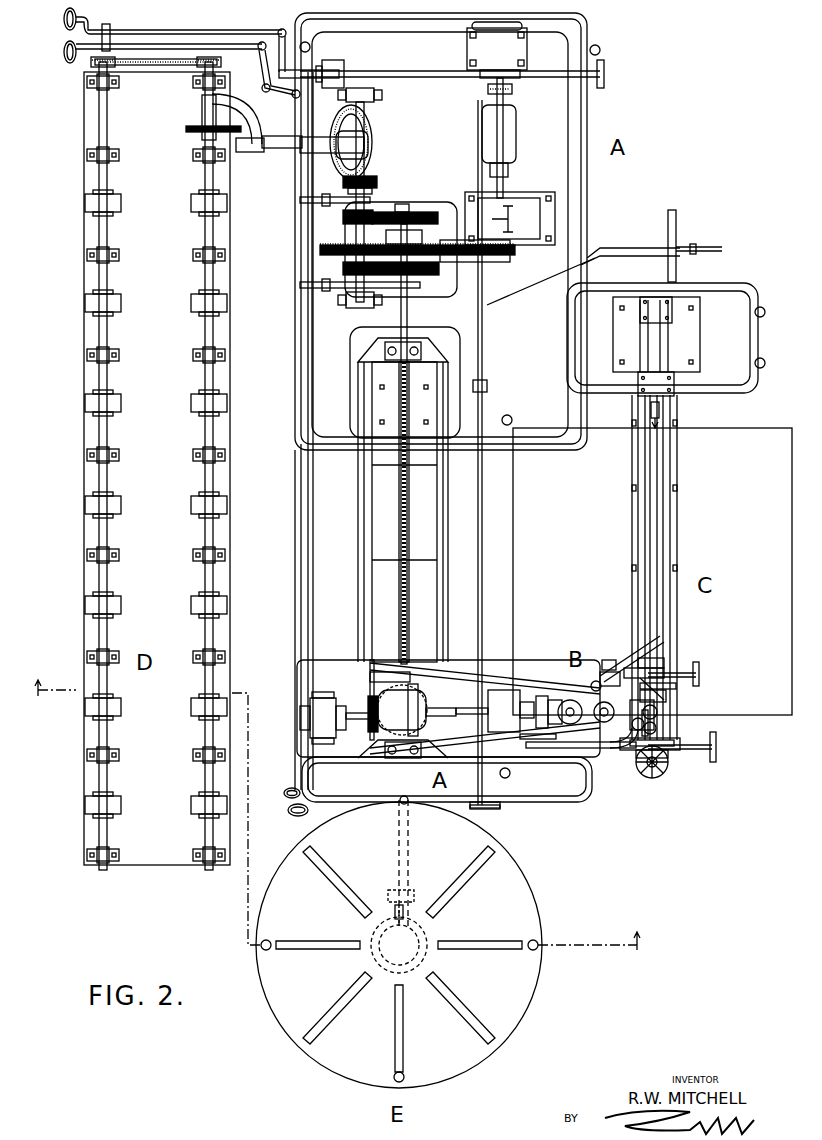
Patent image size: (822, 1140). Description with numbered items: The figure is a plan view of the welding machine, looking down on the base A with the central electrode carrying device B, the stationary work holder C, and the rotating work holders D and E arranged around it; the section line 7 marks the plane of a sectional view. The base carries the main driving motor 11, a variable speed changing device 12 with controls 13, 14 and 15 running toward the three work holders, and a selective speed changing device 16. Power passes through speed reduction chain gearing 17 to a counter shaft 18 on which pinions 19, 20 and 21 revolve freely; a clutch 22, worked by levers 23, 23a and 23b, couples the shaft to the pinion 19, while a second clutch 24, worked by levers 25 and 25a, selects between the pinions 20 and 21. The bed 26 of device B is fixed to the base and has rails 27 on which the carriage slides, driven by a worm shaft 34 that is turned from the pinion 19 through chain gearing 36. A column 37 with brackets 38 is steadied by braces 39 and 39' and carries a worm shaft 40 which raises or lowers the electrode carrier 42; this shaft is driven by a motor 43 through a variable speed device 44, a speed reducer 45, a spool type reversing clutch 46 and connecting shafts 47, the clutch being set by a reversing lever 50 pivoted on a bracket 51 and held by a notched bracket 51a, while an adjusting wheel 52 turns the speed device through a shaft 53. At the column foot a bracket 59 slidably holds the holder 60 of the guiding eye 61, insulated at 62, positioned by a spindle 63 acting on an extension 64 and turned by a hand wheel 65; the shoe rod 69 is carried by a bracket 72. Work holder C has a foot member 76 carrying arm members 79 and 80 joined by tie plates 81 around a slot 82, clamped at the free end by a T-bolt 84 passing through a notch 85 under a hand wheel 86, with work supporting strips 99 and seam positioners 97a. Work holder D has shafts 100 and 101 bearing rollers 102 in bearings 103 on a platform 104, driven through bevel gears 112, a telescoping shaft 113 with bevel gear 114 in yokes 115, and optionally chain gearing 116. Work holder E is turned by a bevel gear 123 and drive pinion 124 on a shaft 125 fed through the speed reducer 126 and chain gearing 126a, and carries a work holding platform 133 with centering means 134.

The section line 7- 7 is at (336, 813).
The main driving motor 11 is at (497, 50).
The variable speed changing device 12 is at (499, 138).
The control 13 is at (604, 88).
The control 14 is at (336, 64).
The control 15 is at (490, 806).
The selective speed changing device 16 is at (510, 218).
The speed reduction chain gearing 17 is at (436, 255).
The counter shaft 18 is at (372, 108).
The pinion 19 is at (370, 280).
The bevel pinion 20 is at (366, 176).
The pinion 21 is at (372, 210).
The clutch 22 is at (335, 293).
The lever 23 is at (716, 249).
The lever 23a is at (64, 22).
The lever 23b is at (296, 816).
The second clutch 24 is at (345, 204).
The lever 25 is at (64, 52).
The lever 25a is at (277, 798).
The bed 26 is at (360, 524).
The guides or rails 27 is at (372, 493).
The worm shaft 34 is at (407, 597).
The speed reduction chain gearing 36 is at (343, 268).
The column 37 is at (604, 722).
The upper and lower brackets 38 is at (578, 700).
The braces 39 is at (485, 736).
The brace 39' is at (485, 700).
The worm shaft 40 is at (574, 728).
The electrode carrier 42 is at (660, 720).
The driving motor 43 is at (321, 698).
The variable speed device 44 is at (412, 710).
The speed reducer 45 is at (495, 711).
The spool type reversing clutch 46 is at (562, 700).
The connecting shafts 47 is at (530, 740).
The reversing lever 50 is at (664, 630).
The bracket 51 is at (596, 680).
The notched bracket 51a is at (622, 650).
The controlling and adjusting wheel 52 is at (716, 760).
The shaft 53 is at (562, 748).
The bracket 59 is at (608, 672).
The holder 60 is at (666, 688).
The electrode guiding eye 61 is at (700, 708).
The insulation 62 is at (658, 706).
The screw-threaded spindle 63 is at (676, 672).
The lateral extension 64 is at (664, 660).
The hand wheel 65 is at (700, 675).
The rod 69 is at (672, 750).
The bracket 72 is at (626, 750).
The foot member 76 is at (657, 334).
The upper arm member 79 is at (640, 508).
The upper arm member 80 is at (668, 508).
The tie plates 81 is at (670, 520).
The slot 82 is at (654, 548).
The T-bolt 84 is at (662, 765).
The notch 85 is at (648, 778).
The hand wheel 86 is at (660, 772).
The chisel edged seam positioners 97a is at (660, 422).
The work supporting strips 99 is at (634, 460).
The shaft 100 is at (212, 640).
The shaft 101 is at (100, 633).
The rubber tired rollers 102 is at (192, 208).
The bearings 103 is at (192, 462).
The platform 104 is at (157, 468).
The bevel gears 112 is at (212, 124).
The telescoping shaft 113 is at (275, 148).
The bevel gear 114 is at (372, 144).
The bearing yokes 115 is at (250, 118).
The chain gearing 116 is at (138, 66).
The bevel gear 123 is at (424, 953).
The drive pinion 124 is at (394, 915).
The shaft 125 is at (418, 212).
The speed reducer 126 is at (488, 280).
The chain gearing 126a is at (440, 212).
The work holding platform 133 is at (399, 945).
The work centering and holding means 134 is at (268, 942).